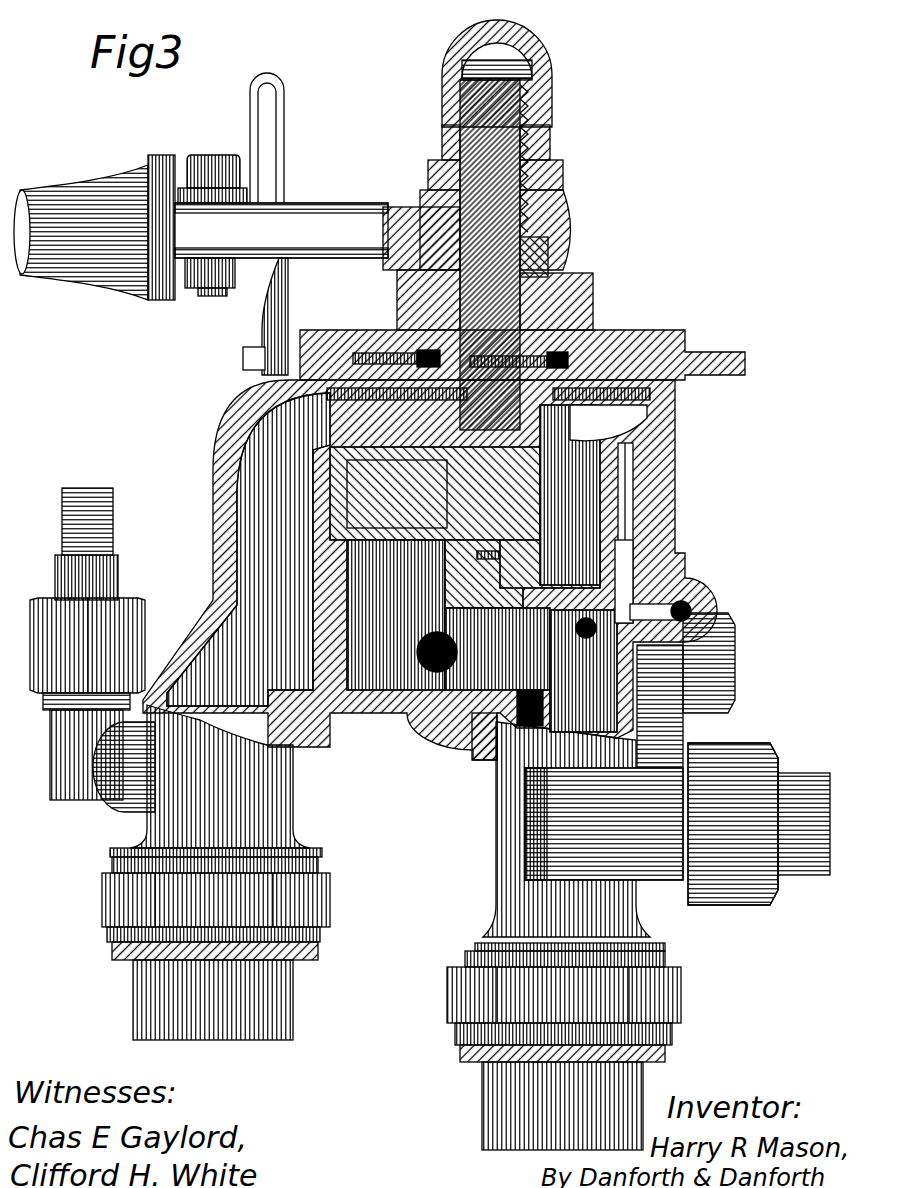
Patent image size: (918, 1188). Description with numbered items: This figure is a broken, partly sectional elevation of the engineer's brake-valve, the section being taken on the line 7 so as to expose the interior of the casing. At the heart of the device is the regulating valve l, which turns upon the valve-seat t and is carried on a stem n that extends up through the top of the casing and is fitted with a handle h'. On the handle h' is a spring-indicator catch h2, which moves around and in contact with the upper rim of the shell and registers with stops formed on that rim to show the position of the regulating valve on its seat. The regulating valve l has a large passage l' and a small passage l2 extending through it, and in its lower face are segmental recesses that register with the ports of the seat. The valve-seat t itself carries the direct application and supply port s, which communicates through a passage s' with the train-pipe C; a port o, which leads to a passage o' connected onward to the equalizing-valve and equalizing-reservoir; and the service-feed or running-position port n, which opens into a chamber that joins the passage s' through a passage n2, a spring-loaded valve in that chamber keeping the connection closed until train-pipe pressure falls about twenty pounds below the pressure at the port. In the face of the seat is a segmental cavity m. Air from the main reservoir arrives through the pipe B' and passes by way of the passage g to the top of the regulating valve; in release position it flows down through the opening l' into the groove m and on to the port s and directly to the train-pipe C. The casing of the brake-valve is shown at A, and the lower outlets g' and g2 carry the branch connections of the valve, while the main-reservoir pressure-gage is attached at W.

The handle h' is at (201, 227).
The spring-indicator catch h2 is at (292, 322).
The valve body A is at (448, 570).
The passage g is at (244, 549).
The regulating-valve l is at (435, 493).
The direct application and supply port s is at (396, 615).
The valve-seat t is at (484, 574).
The passage n2 is at (483, 649).
The passage s' is at (555, 671).
The segmental recess or cavity m is at (550, 564).
The large passage l' is at (593, 495).
The small passage l2 is at (628, 498).
The port o is at (670, 581).
The passage o' is at (711, 603).
The section line 7 is at (736, 663).
The service-feed or running-position port n is at (522, 225).
The branch pipe g2 is at (810, 863).
The outlet pipe g' is at (574, 825).
The train-pipe C is at (482, 1078).
The pipe B' is at (207, 872).
The main-reservoir pressure-gage connection W is at (118, 530).